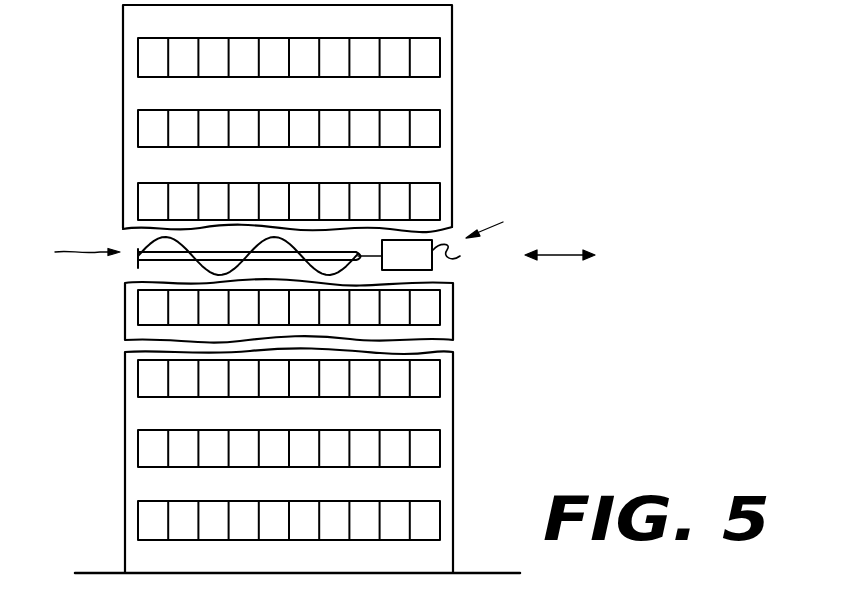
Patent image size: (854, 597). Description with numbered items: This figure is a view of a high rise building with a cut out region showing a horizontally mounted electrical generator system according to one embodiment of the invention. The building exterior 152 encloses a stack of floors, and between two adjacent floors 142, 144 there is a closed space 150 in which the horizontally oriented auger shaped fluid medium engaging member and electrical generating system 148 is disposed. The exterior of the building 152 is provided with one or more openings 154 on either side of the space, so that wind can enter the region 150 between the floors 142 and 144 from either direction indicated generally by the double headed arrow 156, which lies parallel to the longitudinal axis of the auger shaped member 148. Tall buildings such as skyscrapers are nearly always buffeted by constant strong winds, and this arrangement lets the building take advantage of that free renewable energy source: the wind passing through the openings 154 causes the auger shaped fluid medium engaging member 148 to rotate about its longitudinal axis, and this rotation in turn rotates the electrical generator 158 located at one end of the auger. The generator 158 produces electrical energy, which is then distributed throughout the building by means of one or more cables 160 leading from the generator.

The floor 142 is at (133, 203).
The floor 144 is at (131, 312).
The auger shaped fluid medium engaging member and electrical generating system 148 is at (142, 244).
The space between floors 150 is at (138, 263).
The exterior of the building 152 is at (123, 145).
The opening 154 is at (279, 238).
The arrow 156 is at (563, 255).
The electrical generator 158 is at (424, 267).
The cable 160 is at (448, 256).